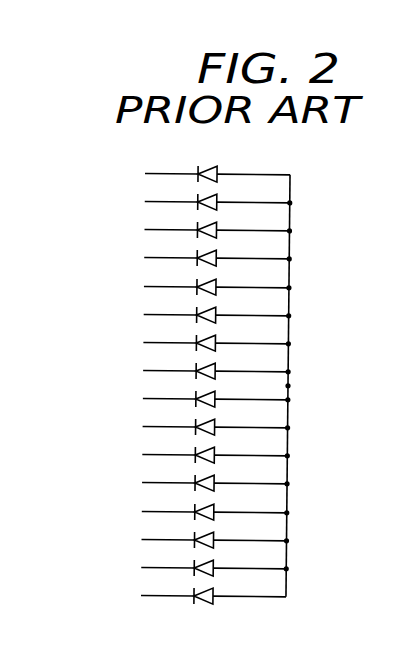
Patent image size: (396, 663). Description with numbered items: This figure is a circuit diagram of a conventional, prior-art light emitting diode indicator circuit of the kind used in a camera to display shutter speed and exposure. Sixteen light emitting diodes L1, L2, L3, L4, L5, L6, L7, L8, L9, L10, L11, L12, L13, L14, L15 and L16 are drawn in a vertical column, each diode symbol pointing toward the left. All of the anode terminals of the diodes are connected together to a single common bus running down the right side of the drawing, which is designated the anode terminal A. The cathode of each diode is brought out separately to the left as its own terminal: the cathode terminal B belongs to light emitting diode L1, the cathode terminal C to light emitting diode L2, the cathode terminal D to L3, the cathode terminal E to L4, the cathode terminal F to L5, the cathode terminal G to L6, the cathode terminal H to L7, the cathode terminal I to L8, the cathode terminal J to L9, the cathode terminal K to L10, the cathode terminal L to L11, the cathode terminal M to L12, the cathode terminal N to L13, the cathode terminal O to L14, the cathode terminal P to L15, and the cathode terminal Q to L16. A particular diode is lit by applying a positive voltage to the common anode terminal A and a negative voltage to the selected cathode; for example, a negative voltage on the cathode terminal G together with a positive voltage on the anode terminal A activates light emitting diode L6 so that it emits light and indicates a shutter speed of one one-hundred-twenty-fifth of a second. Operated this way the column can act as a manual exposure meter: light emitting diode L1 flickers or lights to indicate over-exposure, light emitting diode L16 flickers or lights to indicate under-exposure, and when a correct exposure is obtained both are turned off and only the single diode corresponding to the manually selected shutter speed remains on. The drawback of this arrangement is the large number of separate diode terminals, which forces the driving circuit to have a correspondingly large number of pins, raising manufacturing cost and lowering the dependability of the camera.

The anode terminal A is at (288, 385).
The cathode terminal B is at (164, 173).
The cathode terminal C is at (164, 201).
The cathode terminal D is at (163, 229).
The cathode terminal E is at (163, 257).
The cathode terminal F is at (163, 286).
The cathode terminal G is at (162, 314).
The cathode terminal H is at (162, 342).
The cathode terminal I is at (164, 370).
The cathode terminal J is at (163, 398).
The cathode terminal K is at (161, 426).
The cathode terminal L is at (162, 454).
The cathode terminal M is at (160, 482).
The cathode terminal N is at (161, 511).
The cathode terminal O is at (160, 539).
The cathode terminal P is at (160, 567).
The cathode terminal Q is at (159, 595).
The light emitting diode L1 is at (216, 169).
The light emitting diode L2 is at (216, 197).
The light emitting diode L3 is at (216, 225).
The light emitting diode L4 is at (216, 253).
The light emitting diode L5 is at (216, 282).
The light emitting diode L6 is at (216, 310).
The light emitting diode L7 is at (216, 338).
The light emitting diode L8 is at (216, 366).
The light emitting diode L9 is at (216, 394).
The light emitting diode L10 is at (216, 422).
The light emitting diode L11 is at (216, 450).
The light emitting diode L12 is at (216, 478).
The light emitting diode L13 is at (216, 507).
The light emitting diode L14 is at (216, 535).
The light emitting diode L15 is at (216, 563).
The light emitting diode L16 is at (216, 591).